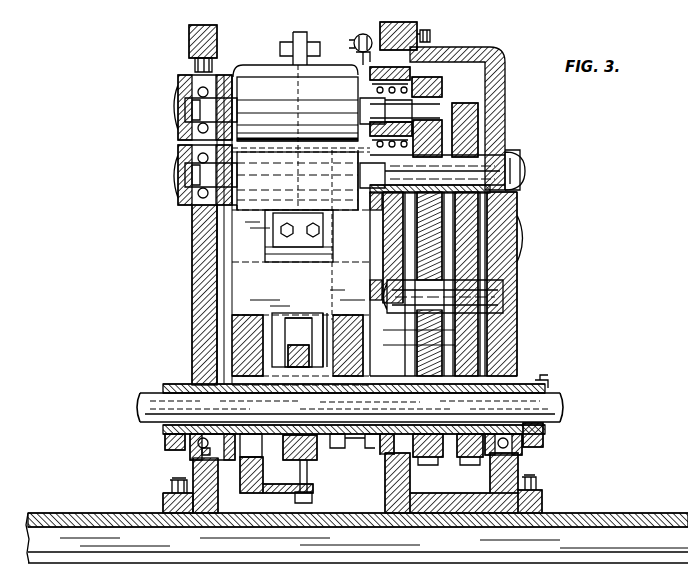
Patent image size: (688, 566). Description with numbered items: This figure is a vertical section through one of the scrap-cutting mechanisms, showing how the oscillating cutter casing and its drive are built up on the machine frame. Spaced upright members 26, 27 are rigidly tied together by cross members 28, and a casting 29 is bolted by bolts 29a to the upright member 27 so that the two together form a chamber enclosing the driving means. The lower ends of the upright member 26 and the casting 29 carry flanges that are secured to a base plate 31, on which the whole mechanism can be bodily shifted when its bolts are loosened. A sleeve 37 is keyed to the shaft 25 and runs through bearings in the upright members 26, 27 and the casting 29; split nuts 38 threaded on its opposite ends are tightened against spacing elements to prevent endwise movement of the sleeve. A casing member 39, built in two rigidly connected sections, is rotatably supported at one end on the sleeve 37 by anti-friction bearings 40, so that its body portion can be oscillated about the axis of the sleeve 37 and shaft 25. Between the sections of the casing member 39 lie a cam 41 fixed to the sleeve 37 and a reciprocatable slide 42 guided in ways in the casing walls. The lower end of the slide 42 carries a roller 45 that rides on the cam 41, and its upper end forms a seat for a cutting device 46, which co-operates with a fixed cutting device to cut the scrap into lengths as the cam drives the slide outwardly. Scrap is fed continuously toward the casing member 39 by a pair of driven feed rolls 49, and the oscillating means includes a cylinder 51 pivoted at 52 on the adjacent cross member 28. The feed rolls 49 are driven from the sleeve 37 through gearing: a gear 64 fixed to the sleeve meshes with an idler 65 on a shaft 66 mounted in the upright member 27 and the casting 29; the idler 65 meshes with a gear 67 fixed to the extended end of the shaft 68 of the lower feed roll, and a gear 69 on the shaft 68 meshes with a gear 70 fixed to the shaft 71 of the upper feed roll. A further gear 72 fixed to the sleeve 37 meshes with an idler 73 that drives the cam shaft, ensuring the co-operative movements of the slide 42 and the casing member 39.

The shaft 25 is at (552, 400).
The upright member 26 is at (195, 318).
The upright member 27 is at (398, 497).
The cross member 28 is at (221, 263).
The casting 29 is at (503, 105).
The bolt 29a is at (431, 36).
The base plate 31 is at (100, 513).
The sleeve 37 is at (542, 389).
The split nut 38 is at (176, 447).
The casing member 39 is at (236, 293).
The anti-friction bearing 40 is at (253, 452).
The cam 41 is at (288, 453).
The slide 42 is at (324, 320).
The roller 45 is at (297, 322).
The cutting device 46 is at (305, 222).
The feed roll 49 is at (253, 85).
The cylinder 51 is at (356, 36).
The pivot 52 is at (353, 46).
The gear 64 is at (466, 460).
The idler 65 is at (470, 337).
The shaft 66 is at (496, 296).
The gear 67 is at (475, 112).
The shaft 68 is at (494, 168).
The gear 69 is at (436, 145).
The gear 70 is at (433, 84).
The shaft 71 is at (428, 104).
The gear 72 is at (430, 460).
The idler 73 is at (430, 342).